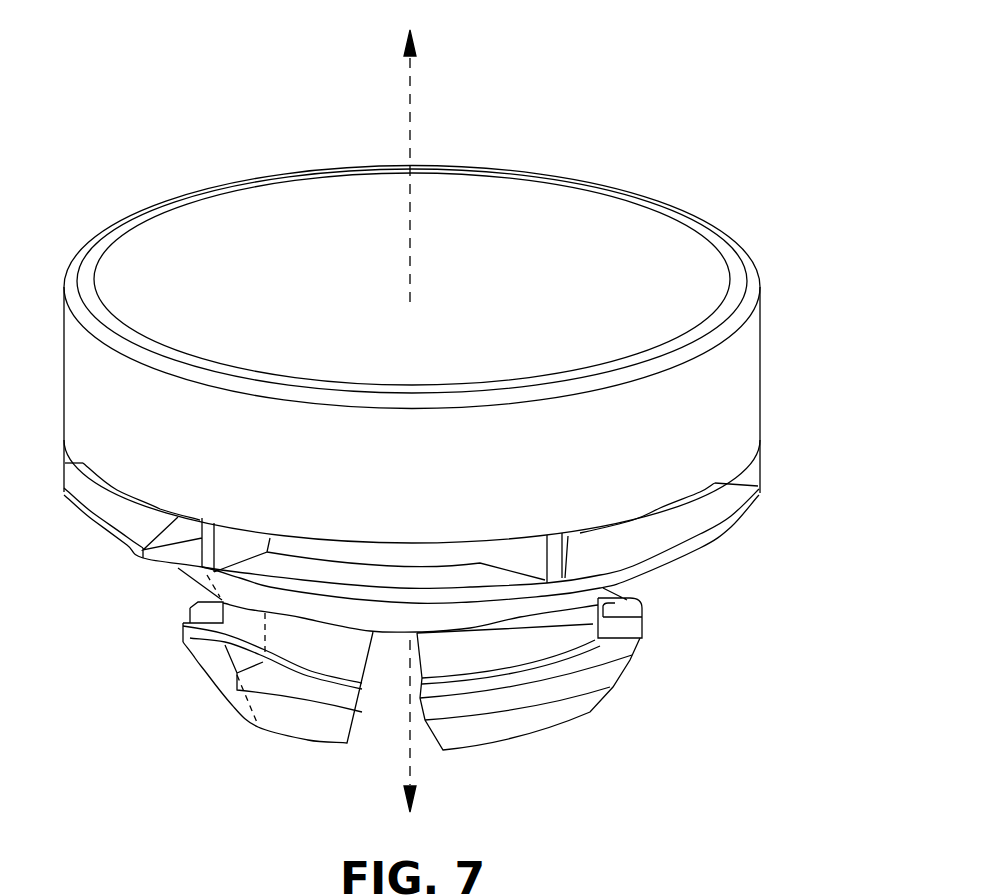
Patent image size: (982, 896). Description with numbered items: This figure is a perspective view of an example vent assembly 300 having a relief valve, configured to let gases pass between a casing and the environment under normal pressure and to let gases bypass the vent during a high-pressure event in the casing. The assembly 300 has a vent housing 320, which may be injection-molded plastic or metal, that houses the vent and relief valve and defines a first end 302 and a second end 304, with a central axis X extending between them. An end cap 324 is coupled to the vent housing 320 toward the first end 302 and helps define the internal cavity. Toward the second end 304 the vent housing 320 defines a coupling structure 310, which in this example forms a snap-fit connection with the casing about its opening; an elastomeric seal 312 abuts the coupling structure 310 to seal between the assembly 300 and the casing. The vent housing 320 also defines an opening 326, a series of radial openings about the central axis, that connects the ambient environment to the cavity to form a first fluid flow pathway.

The assembly 300 is at (475, 101).
The first end 302 is at (465, 385).
The second end 304 is at (141, 664).
The coupling structure 310 is at (424, 668).
The seal 312 is at (643, 597).
The vent housing 320 is at (750, 376).
The end cap 324 is at (643, 262).
The opening 326 is at (672, 518).